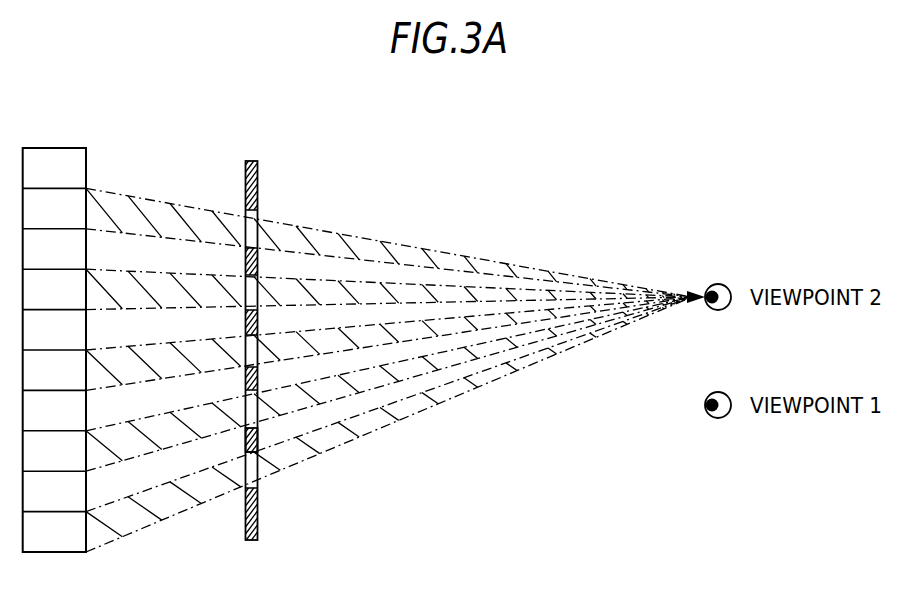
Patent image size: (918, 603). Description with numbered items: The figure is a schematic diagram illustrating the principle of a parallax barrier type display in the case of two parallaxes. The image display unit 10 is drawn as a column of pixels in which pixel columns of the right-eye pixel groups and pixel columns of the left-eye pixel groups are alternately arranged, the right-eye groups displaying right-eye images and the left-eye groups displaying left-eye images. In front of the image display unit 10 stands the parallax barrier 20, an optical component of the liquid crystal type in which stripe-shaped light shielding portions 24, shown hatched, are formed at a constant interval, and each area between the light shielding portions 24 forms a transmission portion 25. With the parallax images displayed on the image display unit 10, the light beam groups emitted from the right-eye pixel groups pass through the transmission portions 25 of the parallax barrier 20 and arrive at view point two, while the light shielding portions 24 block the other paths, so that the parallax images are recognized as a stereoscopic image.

The image display unit 10 is at (52, 150).
The parallax barrier 20 is at (290, 330).
The light shielding portion 24 is at (258, 440).
The transmission portion 25 is at (258, 222).